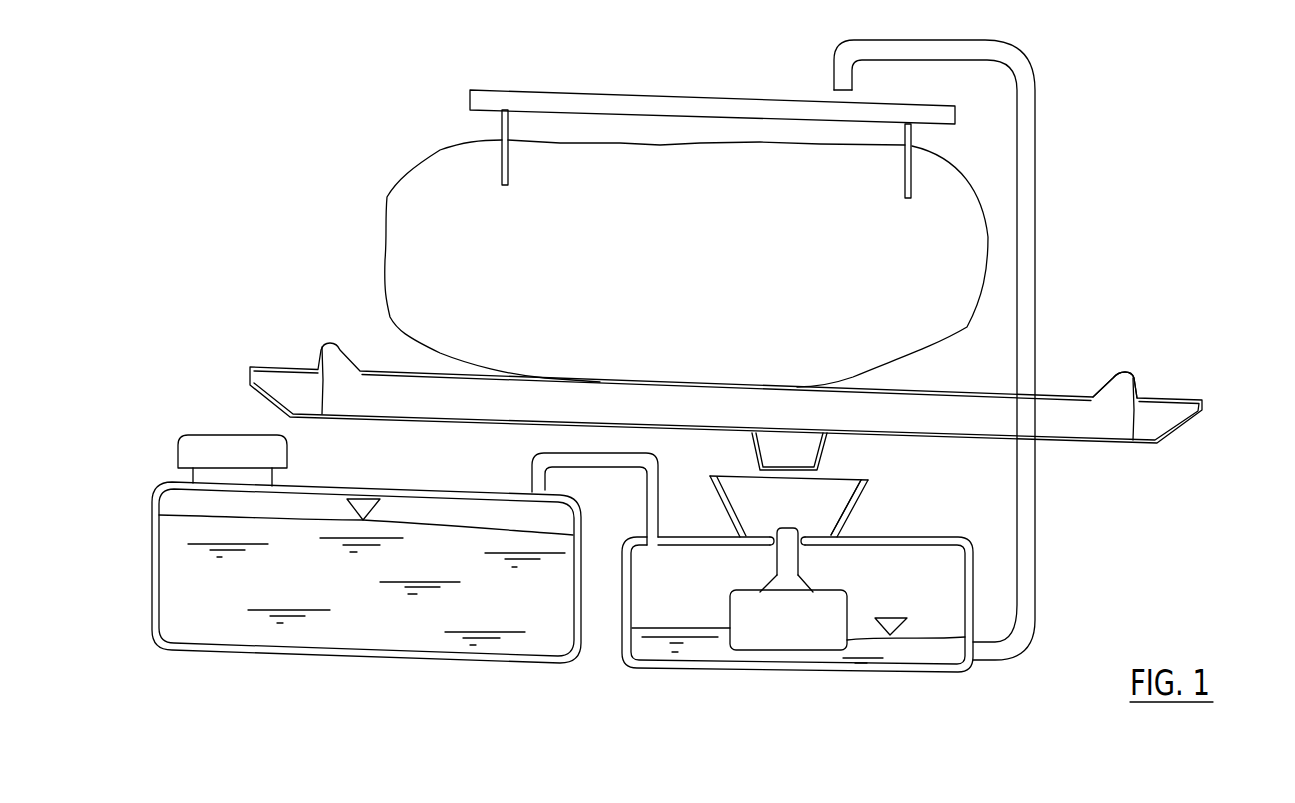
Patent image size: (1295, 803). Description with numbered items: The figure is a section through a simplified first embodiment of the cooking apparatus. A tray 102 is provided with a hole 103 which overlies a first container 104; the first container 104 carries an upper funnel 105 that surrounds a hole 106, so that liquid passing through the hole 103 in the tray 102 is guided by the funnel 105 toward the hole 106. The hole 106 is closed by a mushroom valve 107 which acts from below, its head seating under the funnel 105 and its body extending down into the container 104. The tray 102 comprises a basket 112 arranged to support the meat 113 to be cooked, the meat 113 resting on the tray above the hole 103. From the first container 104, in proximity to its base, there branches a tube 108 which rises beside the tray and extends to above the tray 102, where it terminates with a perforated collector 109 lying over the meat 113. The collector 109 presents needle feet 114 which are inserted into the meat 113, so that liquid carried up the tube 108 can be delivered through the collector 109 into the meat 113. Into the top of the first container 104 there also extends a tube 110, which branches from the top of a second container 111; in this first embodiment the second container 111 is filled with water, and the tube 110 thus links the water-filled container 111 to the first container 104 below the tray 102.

The tray 102 is at (1168, 443).
The hole 103 is at (805, 438).
The first container 104 is at (883, 672).
The upper funnel 105 is at (853, 513).
The hole 106 is at (800, 523).
The mushroom valve 107 is at (772, 633).
The tube 108 is at (1022, 90).
The perforated collector 109 is at (610, 103).
The tube 110 is at (613, 462).
The container 111 is at (415, 660).
The basket 112 is at (1063, 395).
The meat 113 is at (707, 241).
The needle feet 114 is at (503, 133).